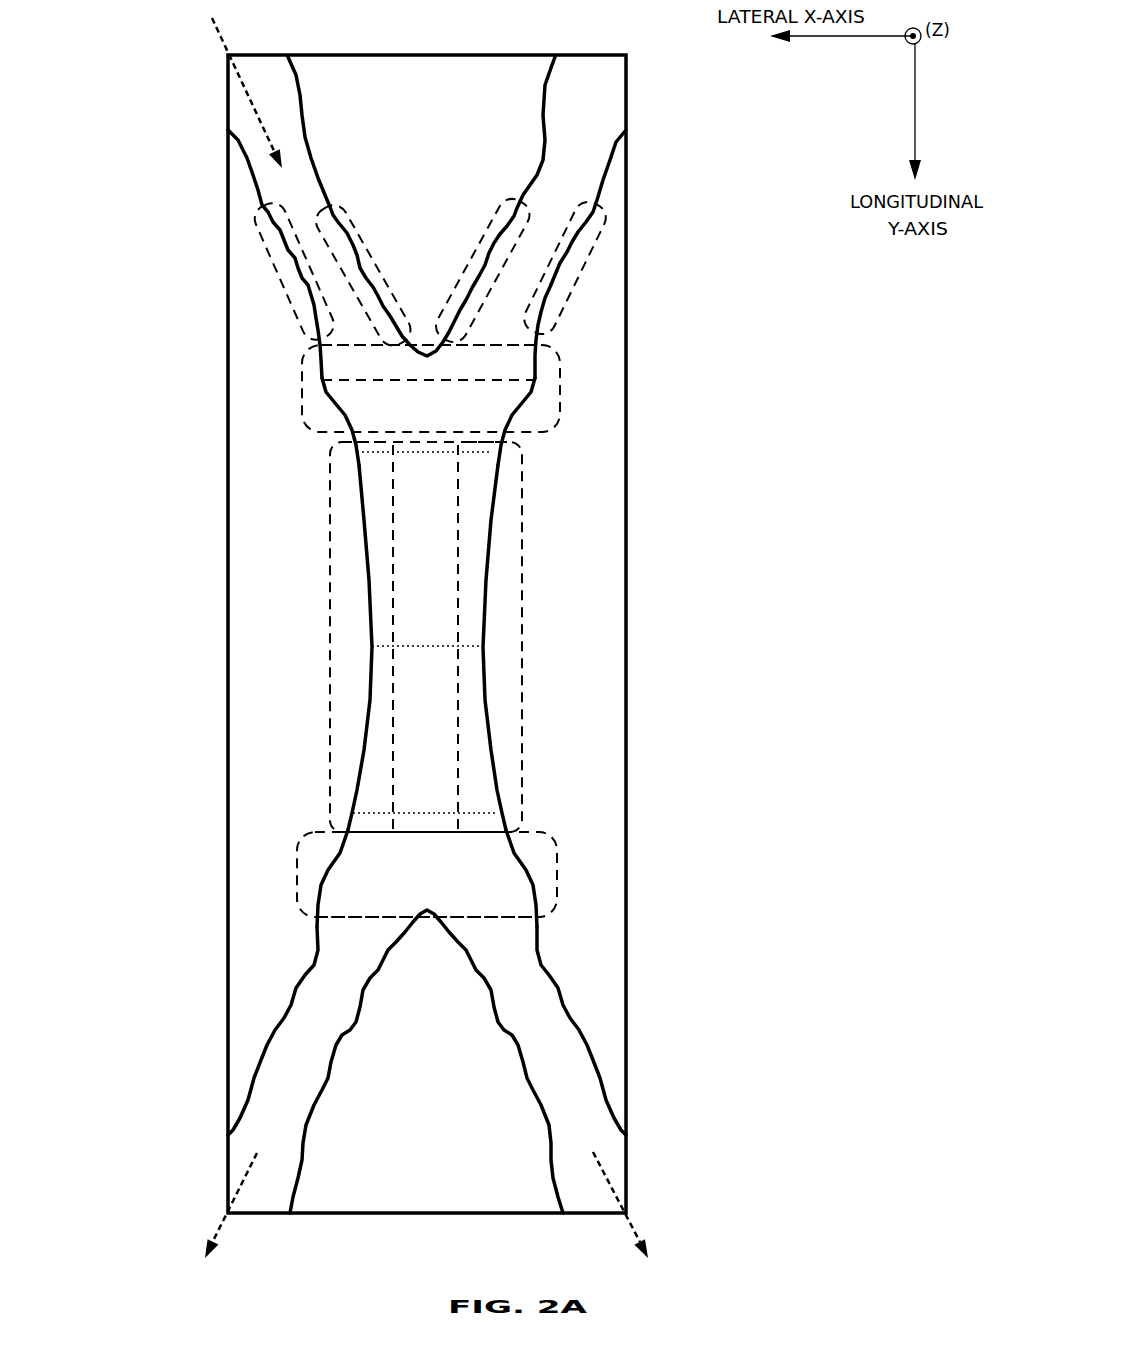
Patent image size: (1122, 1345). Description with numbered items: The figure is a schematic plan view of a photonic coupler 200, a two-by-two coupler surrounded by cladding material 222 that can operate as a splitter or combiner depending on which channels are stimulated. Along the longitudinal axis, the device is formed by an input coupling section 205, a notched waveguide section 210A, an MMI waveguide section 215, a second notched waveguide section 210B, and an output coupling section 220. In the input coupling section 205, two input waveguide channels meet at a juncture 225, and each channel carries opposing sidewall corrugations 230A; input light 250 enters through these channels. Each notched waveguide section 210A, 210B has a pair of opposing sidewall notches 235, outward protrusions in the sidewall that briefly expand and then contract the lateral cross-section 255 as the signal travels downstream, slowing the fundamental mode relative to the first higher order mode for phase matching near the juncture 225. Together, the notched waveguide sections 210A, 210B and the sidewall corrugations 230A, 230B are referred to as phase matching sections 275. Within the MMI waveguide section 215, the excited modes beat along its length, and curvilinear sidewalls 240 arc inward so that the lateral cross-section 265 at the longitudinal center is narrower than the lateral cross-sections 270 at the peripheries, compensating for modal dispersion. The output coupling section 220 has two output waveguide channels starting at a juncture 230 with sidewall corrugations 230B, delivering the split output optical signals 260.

The photonic coupler 200 is at (858, 1194).
The input coupling section 205 is at (646, 335).
The notched waveguide section 210A is at (560, 358).
The notched waveguide section 210B is at (555, 852).
The MMI waveguide section 215 is at (646, 833).
The output coupling section 220 is at (646, 1210).
The cladding material 222 is at (437, 123).
The juncture 225 is at (427, 342).
The juncture 230 is at (429, 922).
The sidewall corrugations 230A is at (262, 214).
The sidewall corrugations 230B is at (527, 1001).
The sidewall notches 235 is at (320, 420).
The curvilinear sidewalls 240 is at (330, 646).
The input light 250 is at (225, 44).
The lateral cross-section 255 is at (332, 382).
The output optical signals 260 is at (220, 1233).
The lateral cross-section 265 is at (432, 646).
The lateral cross-sections 270 is at (432, 452).
The phase matching sections 275 is at (245, 1028).